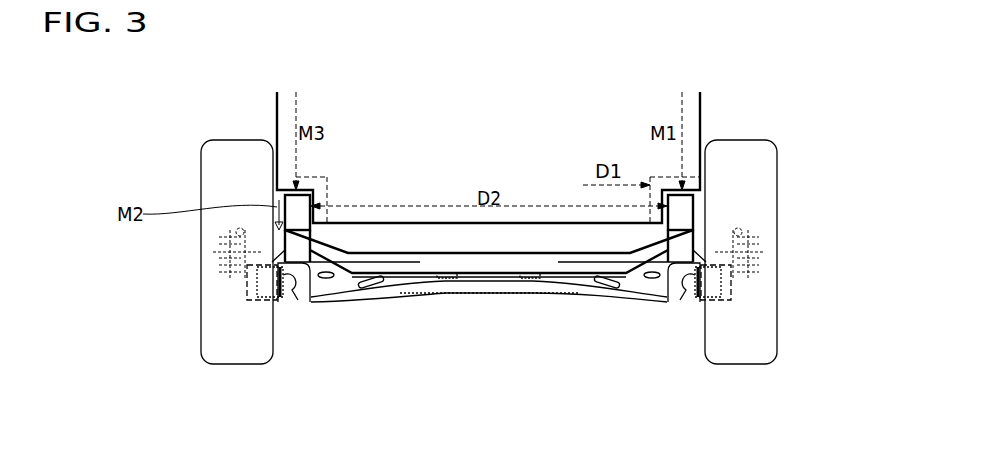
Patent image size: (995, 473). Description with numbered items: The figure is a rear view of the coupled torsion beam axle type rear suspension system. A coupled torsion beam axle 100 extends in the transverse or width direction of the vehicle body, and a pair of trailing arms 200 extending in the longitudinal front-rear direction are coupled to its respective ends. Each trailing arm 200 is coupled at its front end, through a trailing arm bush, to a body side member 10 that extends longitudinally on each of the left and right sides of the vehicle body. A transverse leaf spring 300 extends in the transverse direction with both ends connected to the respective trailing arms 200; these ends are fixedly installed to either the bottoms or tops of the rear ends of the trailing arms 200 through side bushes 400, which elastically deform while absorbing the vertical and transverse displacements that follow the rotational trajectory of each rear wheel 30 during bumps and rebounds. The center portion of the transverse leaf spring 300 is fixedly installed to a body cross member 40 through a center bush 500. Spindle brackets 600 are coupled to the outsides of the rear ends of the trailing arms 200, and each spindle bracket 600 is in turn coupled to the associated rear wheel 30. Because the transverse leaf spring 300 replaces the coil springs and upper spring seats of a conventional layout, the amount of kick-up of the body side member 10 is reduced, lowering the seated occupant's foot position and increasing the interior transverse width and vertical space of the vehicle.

The body side member 10 is at (287, 197).
The rear wheel 30 is at (217, 323).
The body cross member 40 is at (400, 265).
The coupled torsion beam axle 100 is at (343, 283).
The trailing arm 200 is at (292, 284).
The transverse leaf spring 300 is at (560, 287).
The side bush 400 is at (284, 305).
The center bush 500 is at (455, 278).
The spindle bracket 600 is at (213, 252).